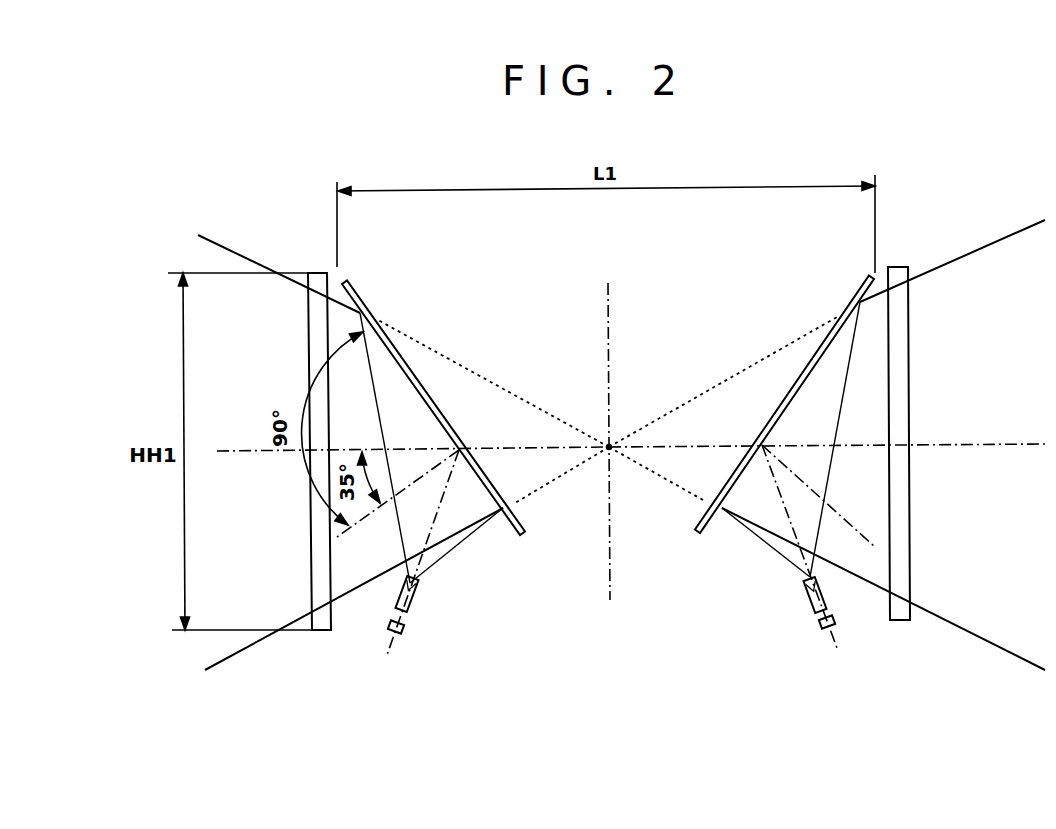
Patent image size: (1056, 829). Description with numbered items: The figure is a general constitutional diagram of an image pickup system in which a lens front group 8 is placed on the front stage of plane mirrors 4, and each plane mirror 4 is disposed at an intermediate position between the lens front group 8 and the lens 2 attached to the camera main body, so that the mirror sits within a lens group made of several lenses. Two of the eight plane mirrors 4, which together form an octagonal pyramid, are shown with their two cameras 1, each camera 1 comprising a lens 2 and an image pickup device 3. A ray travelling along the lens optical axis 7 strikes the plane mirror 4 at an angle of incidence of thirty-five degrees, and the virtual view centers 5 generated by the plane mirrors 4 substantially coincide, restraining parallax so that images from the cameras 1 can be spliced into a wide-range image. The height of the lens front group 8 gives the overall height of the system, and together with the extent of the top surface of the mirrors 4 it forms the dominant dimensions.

The camera 1 is at (611, 641).
The lens 2 is at (417, 603).
The image pickup device 3 is at (518, 671).
The plane mirror 4 is at (406, 359).
The virtual view center 5 is at (612, 445).
The lens optical axis 7 is at (245, 455).
The lens front group 8 is at (318, 271).